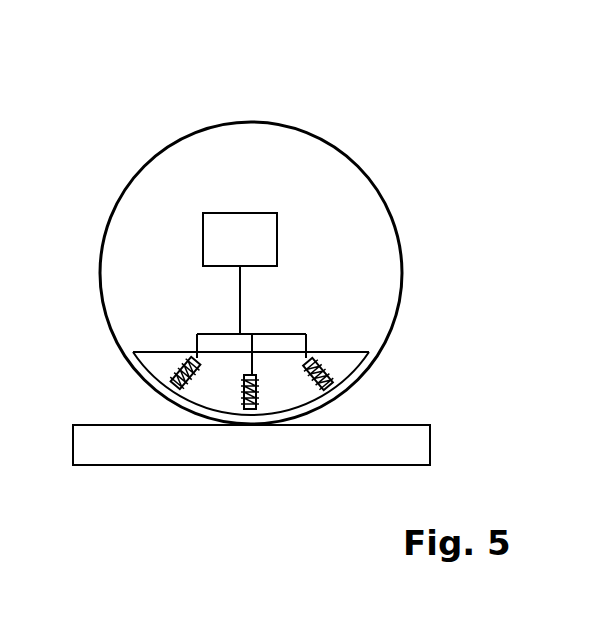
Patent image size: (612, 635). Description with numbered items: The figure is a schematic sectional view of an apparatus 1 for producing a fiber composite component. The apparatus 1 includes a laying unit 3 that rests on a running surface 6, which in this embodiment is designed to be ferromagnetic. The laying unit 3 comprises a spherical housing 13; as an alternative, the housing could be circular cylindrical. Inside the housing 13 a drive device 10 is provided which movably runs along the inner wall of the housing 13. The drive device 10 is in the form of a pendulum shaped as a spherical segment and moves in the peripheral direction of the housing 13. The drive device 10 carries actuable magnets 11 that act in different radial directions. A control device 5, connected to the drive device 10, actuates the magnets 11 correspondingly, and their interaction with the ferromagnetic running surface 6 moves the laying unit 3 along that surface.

The apparatus 1 is at (423, 90).
The laying unit 3 is at (120, 150).
The spherical housing 13 is at (240, 122).
The control device 5 is at (238, 213).
The drive device 10 is at (345, 360).
The actuable magnets 11 is at (185, 388).
The running surface 6 is at (430, 443).